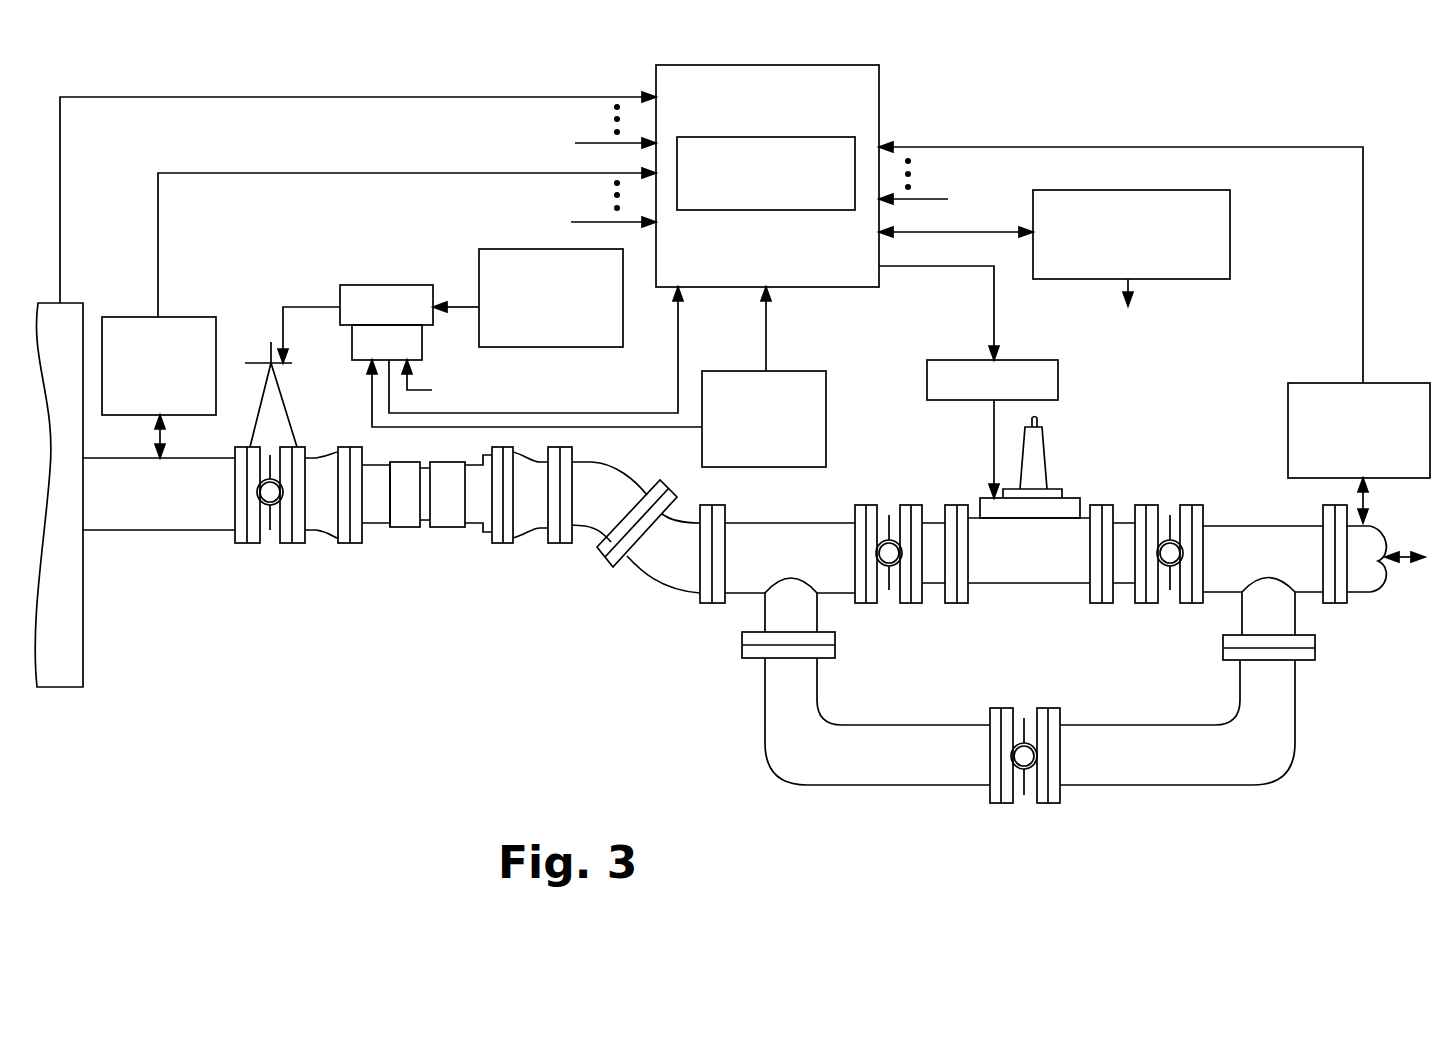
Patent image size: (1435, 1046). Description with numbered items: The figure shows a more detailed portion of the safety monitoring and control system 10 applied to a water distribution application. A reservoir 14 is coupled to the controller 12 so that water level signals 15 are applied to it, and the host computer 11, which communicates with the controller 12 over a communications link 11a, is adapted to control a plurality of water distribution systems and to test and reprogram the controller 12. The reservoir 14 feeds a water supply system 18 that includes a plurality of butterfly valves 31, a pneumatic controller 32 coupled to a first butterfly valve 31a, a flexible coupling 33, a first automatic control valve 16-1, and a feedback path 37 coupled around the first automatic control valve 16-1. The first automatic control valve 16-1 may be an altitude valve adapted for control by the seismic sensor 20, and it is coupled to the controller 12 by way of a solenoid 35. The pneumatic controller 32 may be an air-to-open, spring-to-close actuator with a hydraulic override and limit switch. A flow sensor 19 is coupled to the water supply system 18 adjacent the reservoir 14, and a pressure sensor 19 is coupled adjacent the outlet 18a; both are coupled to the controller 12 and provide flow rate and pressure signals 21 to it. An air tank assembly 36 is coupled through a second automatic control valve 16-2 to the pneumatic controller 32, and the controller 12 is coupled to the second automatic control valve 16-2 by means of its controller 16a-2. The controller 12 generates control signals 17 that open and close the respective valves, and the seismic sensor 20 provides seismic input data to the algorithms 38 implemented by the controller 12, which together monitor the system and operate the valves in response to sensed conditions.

The safety monitoring and control system 10 is at (1377, 860).
The host computer 11 is at (1232, 230).
The communications link 11a is at (980, 228).
The controller 12 is at (879, 100).
The reservoir 14 is at (74, 300).
The water level signals 15 is at (240, 97).
The first automatic control valve 16-1 is at (1050, 488).
The second automatic control valve 16-2 is at (358, 285).
The controller of the second automatic control valve 16a-2 is at (364, 360).
The control signals 17 is at (901, 266).
The water supply system 18 is at (346, 713).
The outlet 18a is at (1394, 595).
The pressure sensor and flow sensor 19 is at (186, 316).
The seismic sensor 20 is at (826, 402).
The pressure signals and flow rate signals 21 is at (330, 173).
The butterfly valves 31 is at (889, 568).
The first butterfly valve 31a is at (268, 506).
The pneumatic controller 32 is at (260, 360).
The flexible coupling 33 is at (556, 578).
The solenoid 35 is at (1059, 381).
The air tank assembly 36 is at (479, 250).
The feedback path 37 is at (1128, 728).
The algorithms 38 is at (725, 210).